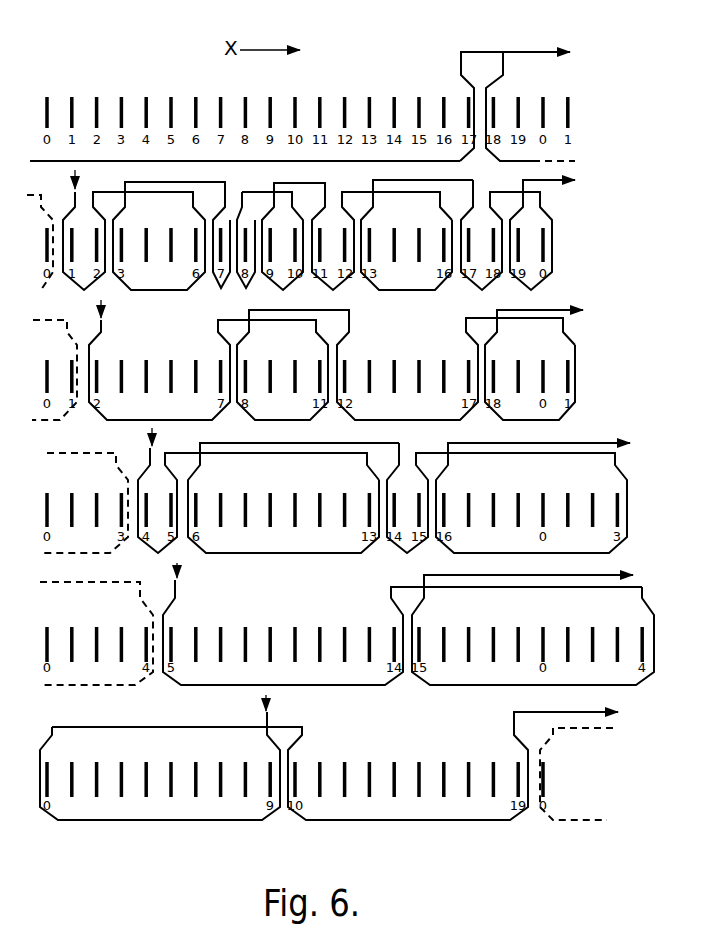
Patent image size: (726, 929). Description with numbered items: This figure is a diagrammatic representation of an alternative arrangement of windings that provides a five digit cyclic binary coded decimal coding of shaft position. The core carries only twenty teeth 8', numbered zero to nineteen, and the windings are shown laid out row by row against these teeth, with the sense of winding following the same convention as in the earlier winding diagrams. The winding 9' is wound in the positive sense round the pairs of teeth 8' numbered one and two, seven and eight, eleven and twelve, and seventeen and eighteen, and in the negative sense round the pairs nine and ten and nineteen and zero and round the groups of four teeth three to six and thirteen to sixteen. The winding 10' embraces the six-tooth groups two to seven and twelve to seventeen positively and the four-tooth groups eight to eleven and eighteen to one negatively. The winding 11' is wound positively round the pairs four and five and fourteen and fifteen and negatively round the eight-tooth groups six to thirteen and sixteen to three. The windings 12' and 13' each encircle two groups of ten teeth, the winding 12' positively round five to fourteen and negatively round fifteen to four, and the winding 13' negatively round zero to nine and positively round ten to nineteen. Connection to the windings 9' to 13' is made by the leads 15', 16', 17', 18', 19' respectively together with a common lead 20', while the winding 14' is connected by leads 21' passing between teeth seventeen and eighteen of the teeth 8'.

The teeth 8' is at (344, 425).
The winding 9' is at (417, 253).
The winding 10' is at (548, 369).
The winding 11' is at (293, 517).
The winding 12' is at (402, 651).
The winding 13' is at (160, 789).
The winding 14' is at (245, 107).
The lead 15' is at (317, 247).
The lead 16' is at (324, 361).
The lead 17' is at (343, 502).
The lead 18' is at (353, 637).
The lead 19' is at (347, 778).
The common lead 20' is at (172, 443).
The leads 21' is at (532, 88).